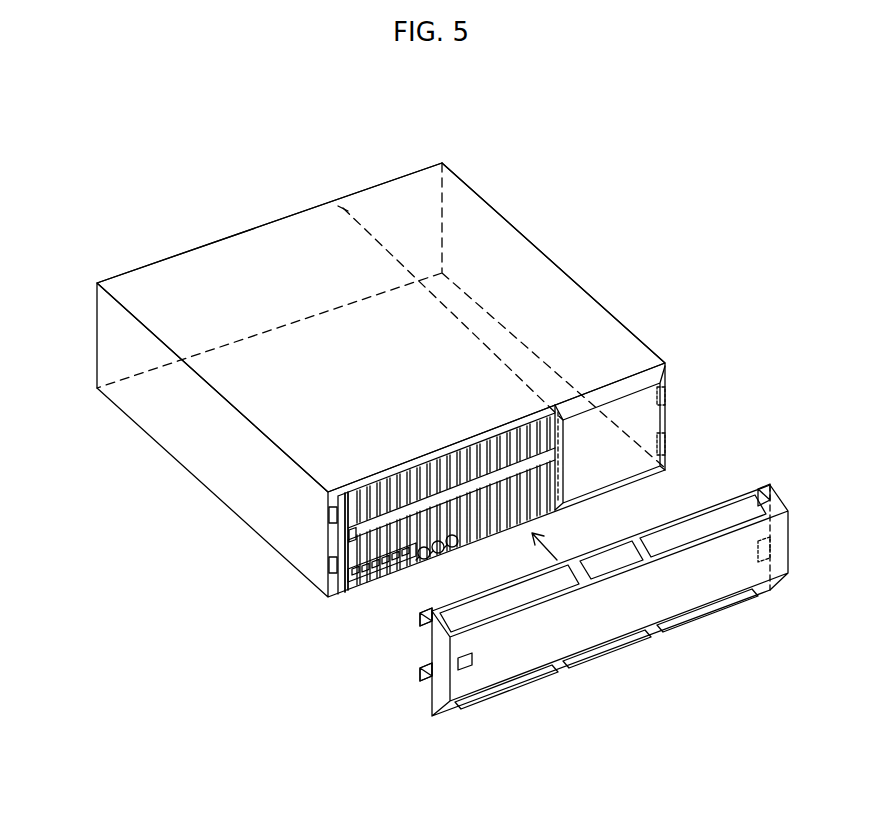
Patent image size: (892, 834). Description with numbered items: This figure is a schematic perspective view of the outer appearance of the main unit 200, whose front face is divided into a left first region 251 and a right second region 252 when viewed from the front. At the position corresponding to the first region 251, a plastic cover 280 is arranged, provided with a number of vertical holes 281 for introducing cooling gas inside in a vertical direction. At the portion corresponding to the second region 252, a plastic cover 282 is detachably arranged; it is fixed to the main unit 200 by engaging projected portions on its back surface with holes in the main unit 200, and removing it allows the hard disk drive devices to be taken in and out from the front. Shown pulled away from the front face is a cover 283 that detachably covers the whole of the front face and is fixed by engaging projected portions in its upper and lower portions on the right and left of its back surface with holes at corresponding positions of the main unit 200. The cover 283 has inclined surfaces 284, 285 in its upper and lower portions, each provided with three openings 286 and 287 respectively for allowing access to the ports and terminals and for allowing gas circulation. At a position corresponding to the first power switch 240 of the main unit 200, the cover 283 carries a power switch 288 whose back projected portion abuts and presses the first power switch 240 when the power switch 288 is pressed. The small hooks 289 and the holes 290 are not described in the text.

The main unit 200 is at (281, 173).
The first region 251 is at (220, 252).
The second region 252 is at (408, 192).
The first power switch 240 is at (345, 542).
The plastic cover 280 is at (412, 565).
The vertical holes 281 is at (347, 585).
The plastic cover 282 is at (668, 422).
The cover 283 is at (500, 665).
The inclined surface 284 is at (432, 645).
The inclined surface 285 is at (432, 706).
The openings 286 is at (690, 522).
The openings 287 is at (543, 680).
The power switch 288 is at (465, 672).
The hook 289 is at (762, 485).
The hook hole 290 is at (672, 390).